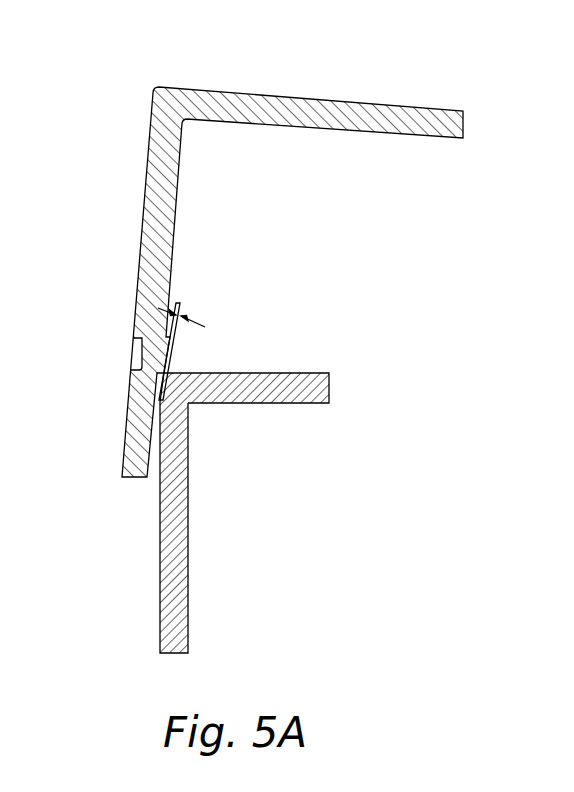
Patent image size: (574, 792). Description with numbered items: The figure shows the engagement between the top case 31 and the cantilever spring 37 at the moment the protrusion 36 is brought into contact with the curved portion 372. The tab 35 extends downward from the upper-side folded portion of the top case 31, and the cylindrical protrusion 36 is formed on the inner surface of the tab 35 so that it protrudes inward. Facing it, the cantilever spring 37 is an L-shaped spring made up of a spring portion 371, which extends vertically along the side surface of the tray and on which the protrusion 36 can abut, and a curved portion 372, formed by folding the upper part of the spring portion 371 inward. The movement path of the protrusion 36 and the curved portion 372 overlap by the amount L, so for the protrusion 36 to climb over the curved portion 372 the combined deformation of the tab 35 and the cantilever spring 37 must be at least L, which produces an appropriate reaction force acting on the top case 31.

The top case 31 is at (322, 112).
The tab 35 is at (143, 265).
The protrusion 36 is at (169, 359).
The cantilever spring 37 is at (245, 515).
The spring portion 371 is at (173, 528).
The curved portion 372 is at (176, 391).
The overlap amount L is at (184, 315).